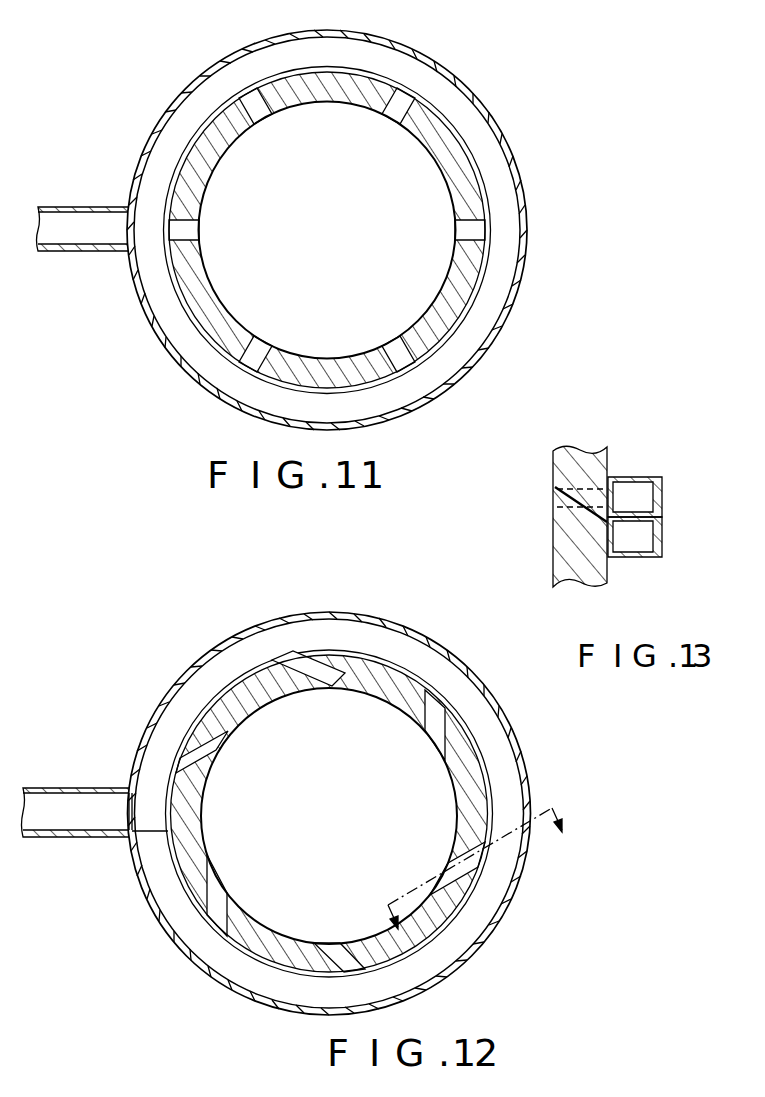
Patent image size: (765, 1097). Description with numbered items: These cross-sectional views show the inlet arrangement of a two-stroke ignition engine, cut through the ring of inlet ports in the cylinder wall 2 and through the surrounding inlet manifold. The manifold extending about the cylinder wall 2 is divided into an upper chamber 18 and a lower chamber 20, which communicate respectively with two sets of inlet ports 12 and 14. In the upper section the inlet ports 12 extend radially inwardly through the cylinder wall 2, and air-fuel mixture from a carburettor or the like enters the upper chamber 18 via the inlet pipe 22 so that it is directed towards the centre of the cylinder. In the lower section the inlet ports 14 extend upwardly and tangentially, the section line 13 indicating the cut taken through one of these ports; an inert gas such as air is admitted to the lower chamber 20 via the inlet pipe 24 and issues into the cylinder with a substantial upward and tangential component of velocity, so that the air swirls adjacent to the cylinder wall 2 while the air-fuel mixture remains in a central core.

In FIG. 11, the cylinder wall 2 is at (351, 230).
In FIG. 12, the cylinder wall 2 is at (366, 813).
In FIG. 13, the cylinder wall 2 is at (590, 463).
In FIG. 11, the inlet ports 12 is at (257, 113).
In FIG. 12, the section line 13— 13 is at (469, 862).
In FIG. 12, the inlet ports 14 is at (312, 677).
In FIG. 13, the inlet ports 14 is at (580, 518).
In FIG. 11, the upper chamber 18 is at (453, 103).
In FIG. 13, the upper chamber 18 is at (643, 492).
In FIG. 12, the lower chamber 20 is at (492, 748).
In FIG. 13, the lower chamber 20 is at (635, 543).
In FIG. 11, the inlet pipe 22 is at (72, 223).
In FIG. 12, the inlet pipe 24 is at (58, 815).